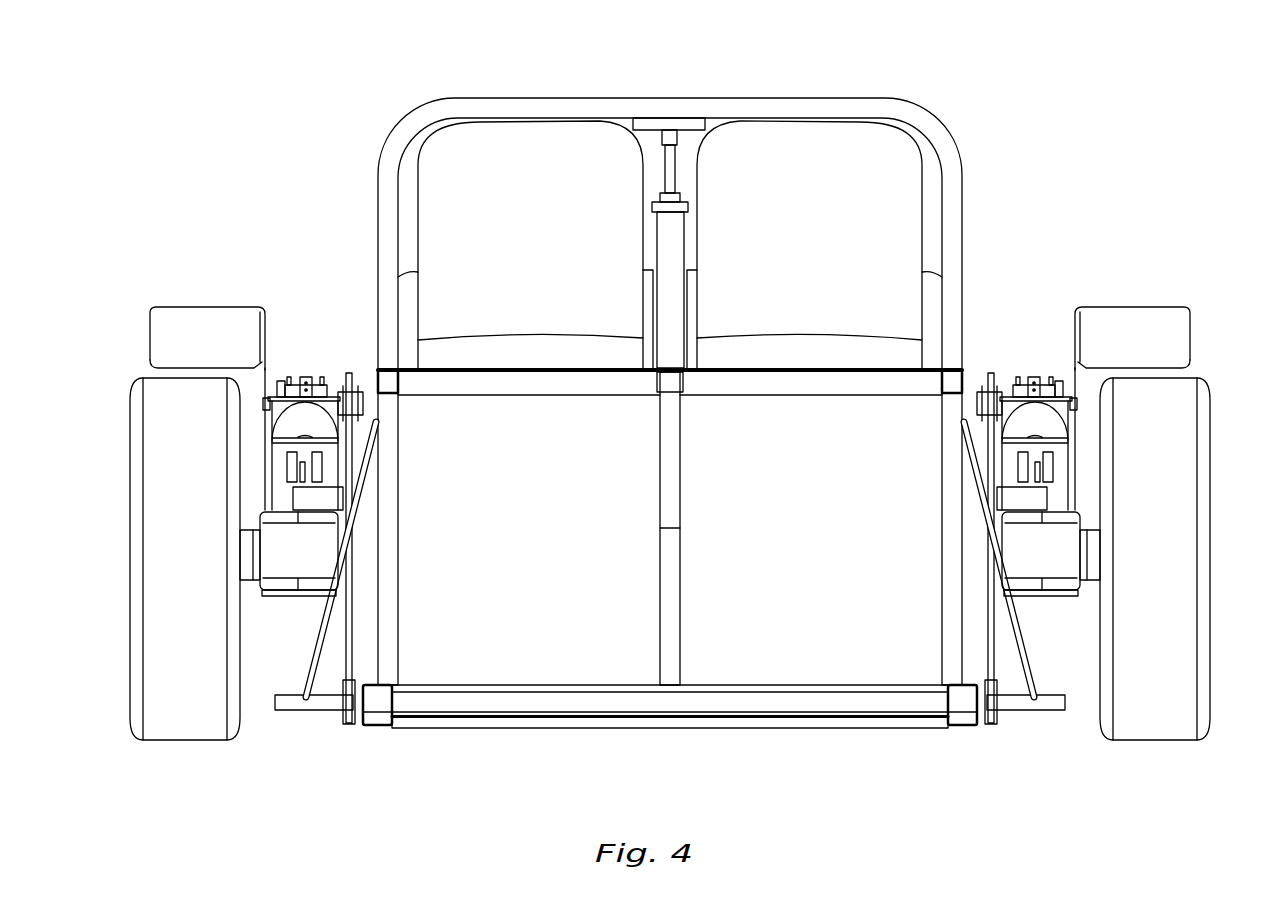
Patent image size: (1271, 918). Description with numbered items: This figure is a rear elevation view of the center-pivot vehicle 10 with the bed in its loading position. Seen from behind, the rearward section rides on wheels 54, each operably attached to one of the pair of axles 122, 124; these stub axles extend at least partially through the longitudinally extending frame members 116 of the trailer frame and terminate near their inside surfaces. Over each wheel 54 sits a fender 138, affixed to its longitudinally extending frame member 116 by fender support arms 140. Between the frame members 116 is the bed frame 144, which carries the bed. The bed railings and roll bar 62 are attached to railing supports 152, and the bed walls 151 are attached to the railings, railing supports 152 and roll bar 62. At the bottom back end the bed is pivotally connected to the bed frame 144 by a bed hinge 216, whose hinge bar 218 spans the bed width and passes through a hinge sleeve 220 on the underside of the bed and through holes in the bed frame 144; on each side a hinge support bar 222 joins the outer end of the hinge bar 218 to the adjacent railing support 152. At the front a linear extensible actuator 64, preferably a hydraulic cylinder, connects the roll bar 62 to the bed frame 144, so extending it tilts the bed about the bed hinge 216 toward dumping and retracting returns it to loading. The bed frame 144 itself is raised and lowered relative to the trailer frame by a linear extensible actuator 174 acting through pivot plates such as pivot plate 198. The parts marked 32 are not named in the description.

The center-pivot vehicle 10 is at (952, 93).
The seat 32 is at (445, 163).
The wheels 54 is at (160, 738).
The roll bar 62 is at (960, 210).
The linear extensible actuator 64 is at (678, 247).
The longitudinally extending frame member 116 is at (262, 590).
The axle 122 is at (290, 541).
The axle 124 is at (1052, 540).
The fender 138 is at (175, 312).
The fender support arms 140 is at (268, 323).
The bed frame 144 is at (383, 728).
The bed walls 151 is at (774, 494).
The railing supports 152 is at (400, 543).
The linear extensible actuator 174 is at (306, 428).
The pivot plate 198 is at (350, 624).
The bed hinge 216 is at (748, 692).
The hinge bar 218 is at (288, 712).
The hinge sleeve 220 is at (355, 718).
The hinge support bar 222 is at (318, 636).